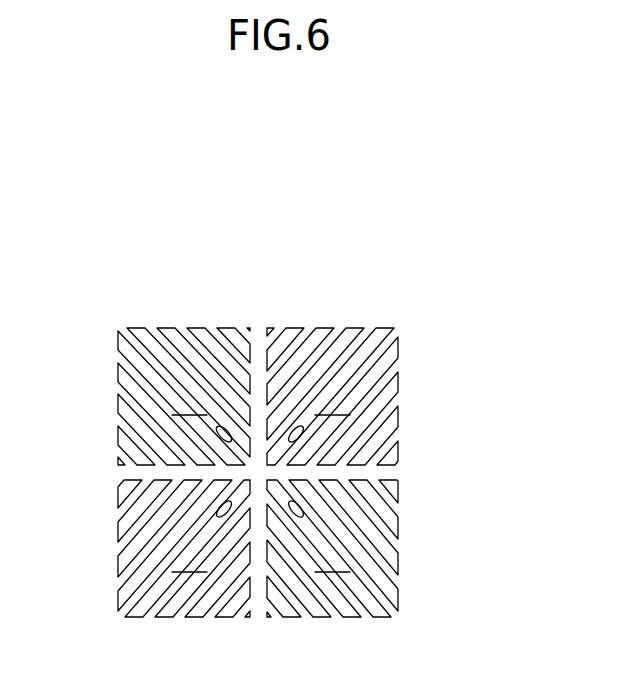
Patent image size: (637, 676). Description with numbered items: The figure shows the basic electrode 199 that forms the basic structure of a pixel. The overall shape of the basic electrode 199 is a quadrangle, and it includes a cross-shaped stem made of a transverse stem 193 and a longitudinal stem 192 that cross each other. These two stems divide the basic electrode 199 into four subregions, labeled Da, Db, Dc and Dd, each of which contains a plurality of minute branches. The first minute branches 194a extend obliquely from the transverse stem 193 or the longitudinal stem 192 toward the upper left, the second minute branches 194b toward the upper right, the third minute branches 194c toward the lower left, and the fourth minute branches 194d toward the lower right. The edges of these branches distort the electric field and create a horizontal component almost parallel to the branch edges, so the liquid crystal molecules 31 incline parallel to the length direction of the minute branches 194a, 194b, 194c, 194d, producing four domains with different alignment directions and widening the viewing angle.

The basic electrode 199 is at (258, 439).
The first minute branch 194a is at (204, 358).
The second minute branch 194b is at (370, 342).
The third minute branch 194c is at (150, 575).
The fourth minute branch 194d is at (372, 592).
The longitudinal stem 192 is at (262, 371).
The transverse stem 193 is at (300, 500).
The liquid crystal molecules 31 is at (302, 437).